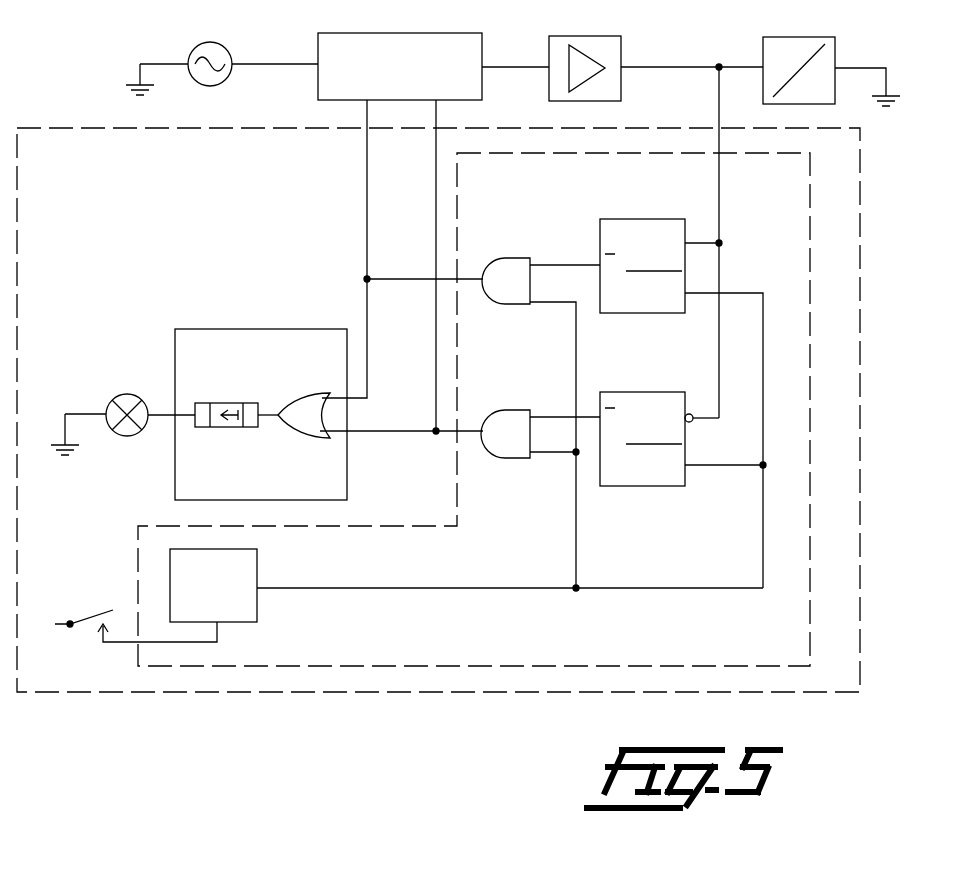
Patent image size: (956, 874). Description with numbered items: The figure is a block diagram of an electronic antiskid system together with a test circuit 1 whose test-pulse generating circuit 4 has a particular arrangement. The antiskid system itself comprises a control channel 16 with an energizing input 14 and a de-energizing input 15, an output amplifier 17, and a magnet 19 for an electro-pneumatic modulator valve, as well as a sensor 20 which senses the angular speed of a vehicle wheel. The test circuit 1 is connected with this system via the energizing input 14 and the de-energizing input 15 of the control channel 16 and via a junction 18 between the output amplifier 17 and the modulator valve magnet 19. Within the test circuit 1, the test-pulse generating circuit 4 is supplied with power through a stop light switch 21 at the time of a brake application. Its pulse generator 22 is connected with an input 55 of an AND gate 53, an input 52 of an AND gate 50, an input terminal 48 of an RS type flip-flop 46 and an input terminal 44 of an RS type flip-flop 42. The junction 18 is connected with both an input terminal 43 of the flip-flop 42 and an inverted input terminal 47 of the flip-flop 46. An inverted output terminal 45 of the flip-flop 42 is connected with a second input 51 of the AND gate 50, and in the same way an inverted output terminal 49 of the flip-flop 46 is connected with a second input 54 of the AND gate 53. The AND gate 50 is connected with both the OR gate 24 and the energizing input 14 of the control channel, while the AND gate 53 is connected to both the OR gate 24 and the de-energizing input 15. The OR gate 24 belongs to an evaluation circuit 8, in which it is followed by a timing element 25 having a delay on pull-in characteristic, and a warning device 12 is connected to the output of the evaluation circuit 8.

The test circuit 1 is at (345, 692).
The test-pulse generating circuit 4 is at (446, 666).
The evaluation circuit 8 is at (260, 329).
The warning device 12 is at (120, 397).
The energizing input 14 is at (365, 104).
The de-energizing input 15 is at (437, 102).
The control channel 16 is at (375, 33).
The output amplifier 17 is at (583, 36).
The junction 18 is at (719, 66).
The magnet 19 is at (798, 37).
The sensor 20 is at (225, 52).
The stop light switch 21 is at (80, 626).
The pulse generator 22 is at (257, 568).
The OR gate 24 is at (310, 395).
The timing element 25 is at (232, 403).
The RS type flip-flop 42 is at (652, 219).
The input terminal 43 is at (686, 243).
The input terminal 44 is at (686, 295).
The inverted output terminal 45 is at (600, 268).
The RS type flip-flop 46 is at (638, 487).
The inverted input terminal 47 is at (691, 415).
The input terminal 48 is at (686, 466).
The inverted output terminal 49 is at (600, 410).
The AND gate 50 is at (501, 259).
The second input 51 is at (532, 264).
The input 52 is at (532, 303).
The AND gate 53 is at (501, 411).
The second input 54 is at (532, 417).
The input 55 is at (532, 453).